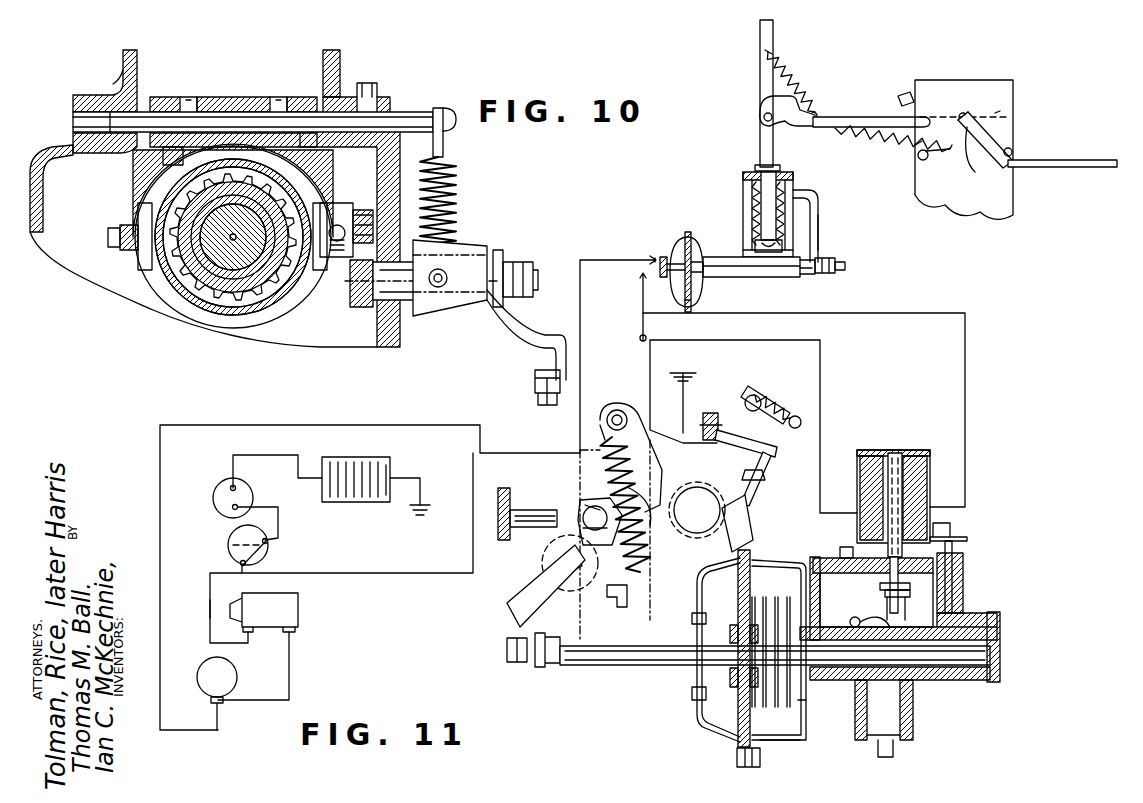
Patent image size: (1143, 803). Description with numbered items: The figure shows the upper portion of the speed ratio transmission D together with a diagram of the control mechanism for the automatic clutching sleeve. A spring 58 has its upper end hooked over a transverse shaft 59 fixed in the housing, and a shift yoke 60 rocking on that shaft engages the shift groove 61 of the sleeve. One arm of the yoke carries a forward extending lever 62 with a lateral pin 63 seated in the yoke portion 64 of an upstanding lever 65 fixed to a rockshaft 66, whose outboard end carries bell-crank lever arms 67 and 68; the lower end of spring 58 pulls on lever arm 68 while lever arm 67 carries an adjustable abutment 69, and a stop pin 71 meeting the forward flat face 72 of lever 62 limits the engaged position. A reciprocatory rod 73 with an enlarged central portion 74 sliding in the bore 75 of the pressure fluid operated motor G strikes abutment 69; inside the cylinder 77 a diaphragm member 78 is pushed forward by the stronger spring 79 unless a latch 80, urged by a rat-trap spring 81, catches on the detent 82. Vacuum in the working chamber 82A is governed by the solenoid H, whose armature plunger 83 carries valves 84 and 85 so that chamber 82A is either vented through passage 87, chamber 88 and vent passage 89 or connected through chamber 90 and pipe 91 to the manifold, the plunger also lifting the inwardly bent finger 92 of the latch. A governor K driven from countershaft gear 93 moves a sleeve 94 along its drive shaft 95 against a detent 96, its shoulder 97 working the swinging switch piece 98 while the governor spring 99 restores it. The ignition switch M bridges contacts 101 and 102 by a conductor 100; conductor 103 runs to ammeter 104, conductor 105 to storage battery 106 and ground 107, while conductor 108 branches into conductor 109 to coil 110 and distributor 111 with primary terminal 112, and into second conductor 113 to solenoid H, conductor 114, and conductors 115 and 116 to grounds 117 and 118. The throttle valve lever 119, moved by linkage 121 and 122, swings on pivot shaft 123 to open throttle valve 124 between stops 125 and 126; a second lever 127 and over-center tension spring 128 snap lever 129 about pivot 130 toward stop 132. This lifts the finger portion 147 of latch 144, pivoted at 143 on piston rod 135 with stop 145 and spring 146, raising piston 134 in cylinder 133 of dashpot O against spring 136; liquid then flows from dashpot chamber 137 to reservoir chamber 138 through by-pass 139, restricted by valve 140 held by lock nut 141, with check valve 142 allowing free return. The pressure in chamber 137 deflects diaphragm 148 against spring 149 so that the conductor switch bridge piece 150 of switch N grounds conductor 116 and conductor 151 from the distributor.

In FIG. 10, the speed ratio transmission D is at (112, 82).
In FIG. 10, the spring 58 is at (458, 178).
In FIG. 10, the transverse shaft 59 is at (436, 110).
In FIG. 11, the transverse shaft 59 is at (620, 412).
In FIG. 10, the shift yoke 60 is at (135, 172).
In FIG. 11, the shift yoke 60 is at (612, 405).
In FIG. 10, the shift groove 61 is at (165, 292).
In FIG. 10, the forward extending lever 62 is at (358, 209).
In FIG. 11, the forward extending lever 62 is at (590, 505).
In FIG. 10, the lateral pin 63 is at (368, 213).
In FIG. 11, the lateral pin 63 is at (595, 515).
In FIG. 11, the yoke portion 64 is at (588, 518).
In FIG. 10, the upstanding lever 65 is at (358, 306).
In FIG. 11, the upstanding lever 65 is at (553, 548).
In FIG. 10, the rockshaft 66 is at (390, 300).
In FIG. 11, the rockshaft 66 is at (573, 580).
In FIG. 10, the lever arm 67 is at (453, 290).
In FIG. 11, the lever arm 67 is at (520, 598).
In FIG. 10, the lever arm 68 is at (520, 350).
In FIG. 11, the lever arm 68 is at (615, 608).
In FIG. 10, the adjustable abutment 69 is at (535, 396).
In FIG. 11, the adjustable abutment 69 is at (535, 660).
In FIG. 10, the stop pin 71 is at (337, 252).
In FIG. 11, the stop pin 71 is at (510, 490).
In FIG. 11, the forward flat face 72 is at (542, 512).
In FIG. 11, the reciprocatory rod 73 is at (618, 665).
In FIG. 11, the enlarged central portion 74 is at (792, 670).
In FIG. 11, the bore 75 is at (800, 662).
In FIG. 11, the cylinder 77 is at (798, 735).
In FIG. 11, the differential pressure and spring operated member 78 is at (737, 755).
In FIG. 11, the spring 79 is at (750, 562).
In FIG. 11, the latch 80 is at (870, 632).
In FIG. 11, the rat-trap spring 81 is at (872, 626).
In FIG. 11, the detent 82 is at (880, 682).
In FIG. 11, the working chamber 82A is at (780, 742).
In FIG. 11, the armature plunger 83 is at (897, 500).
In FIG. 11, the valve 84 is at (950, 524).
In FIG. 11, the valve 85 is at (912, 585).
In FIG. 11, the passage 87 is at (808, 605).
In FIG. 11, the chamber 88 is at (953, 545).
In FIG. 11, the vent passage 89 is at (840, 550).
In FIG. 11, the chamber 90 is at (928, 618).
In FIG. 11, the pipe 91 is at (895, 748).
In FIG. 11, the inwardly bent finger 92 is at (882, 593).
In FIG. 11, the countershaft gear 93 is at (688, 495).
In FIG. 11, the sleeve 94 is at (778, 446).
In FIG. 11, the drive shaft 95 is at (748, 505).
In FIG. 11, the detent 96 is at (764, 478).
In FIG. 11, the shoulder 97 is at (771, 458).
In FIG. 11, the swinging switch piece 98 is at (719, 428).
In FIG. 11, the governor spring 99 is at (792, 395).
In FIG. 11, the conductor 100 is at (267, 556).
In FIG. 11, the contact 101 is at (268, 541).
In FIG. 11, the contact 102 is at (238, 560).
In FIG. 11, the conductor 103 is at (278, 526).
In FIG. 11, the ammeter 104 is at (213, 497).
In FIG. 11, the conductor 105 is at (290, 455).
In FIG. 11, the storage battery 106 is at (355, 498).
In FIG. 11, the ground 107 is at (421, 518).
In FIG. 11, the conductor 108 is at (245, 569).
In FIG. 11, the conductor 109 is at (210, 616).
In FIG. 11, the coil 110 is at (284, 606).
In FIG. 11, the distributor 111 is at (213, 663).
In FIG. 11, the primary terminal 112 is at (211, 700).
In FIG. 11, the second conductor 113 is at (380, 573).
In FIG. 11, the conductor 114 is at (965, 363).
In FIG. 11, the conductor 115 is at (641, 313).
In FIG. 11, the conductor 116 is at (641, 278).
In FIG. 11, the ground 117 is at (684, 371).
In FIG. 11, the ground 118 is at (695, 285).
In FIG. 11, the engine throttle valve lever 119 is at (1000, 140).
In FIG. 11, the linkage 121 is at (915, 145).
In FIG. 11, the linkage 122 is at (1060, 167).
In FIG. 11, the pivot shaft 123 is at (968, 117).
In FIG. 11, the throttle valve 124 is at (997, 113).
In FIG. 11, the stop 125 is at (1014, 152).
In FIG. 11, the stop 126 is at (920, 159).
In FIG. 11, the second lever 127 is at (972, 150).
In FIG. 11, the over-center tension spring 128 is at (875, 140).
In FIG. 11, the lever 129 is at (866, 116).
In FIG. 11, the pivot 130 is at (928, 116).
In FIG. 11, the stop 132 is at (904, 94).
In FIG. 11, the cylinder 133 is at (742, 180).
In FIG. 11, the piston 134 is at (755, 245).
In FIG. 11, the piston rod 135 is at (760, 75).
In FIG. 11, the spring 136 is at (752, 212).
In FIG. 11, the dashpot chamber 137 is at (766, 278).
In FIG. 11, the reservoir chamber 138 is at (819, 200).
In FIG. 11, the by-pass 139 is at (819, 220).
In FIG. 11, the valve 140 is at (836, 264).
In FIG. 11, the lock nut 141 is at (826, 257).
In FIG. 11, the check valve 142 is at (810, 276).
In FIG. 11, the pivot 143 is at (763, 117).
In FIG. 11, the latch 144 is at (795, 127).
In FIG. 11, the stop 145 is at (797, 90).
In FIG. 11, the spring 146 is at (785, 70).
In FIG. 11, the finger portion 147 is at (805, 110).
In FIG. 11, the diaphragm 148 is at (688, 240).
In FIG. 11, the spring 149 is at (686, 302).
In FIG. 11, the conductor switch bridge piece 150 is at (662, 255).
In FIG. 11, the conductor 151 is at (580, 260).
In FIG. 11, the pressure fluid operated motor G is at (698, 725).
In FIG. 11, the solenoid H is at (930, 466).
In FIG. 11, the governor K is at (765, 390).
In FIG. 11, the ignition switch M is at (228, 538).
In FIG. 11, the combined kickdown interrupter switch N is at (653, 260).
In FIG. 11, the dashpot O is at (742, 193).